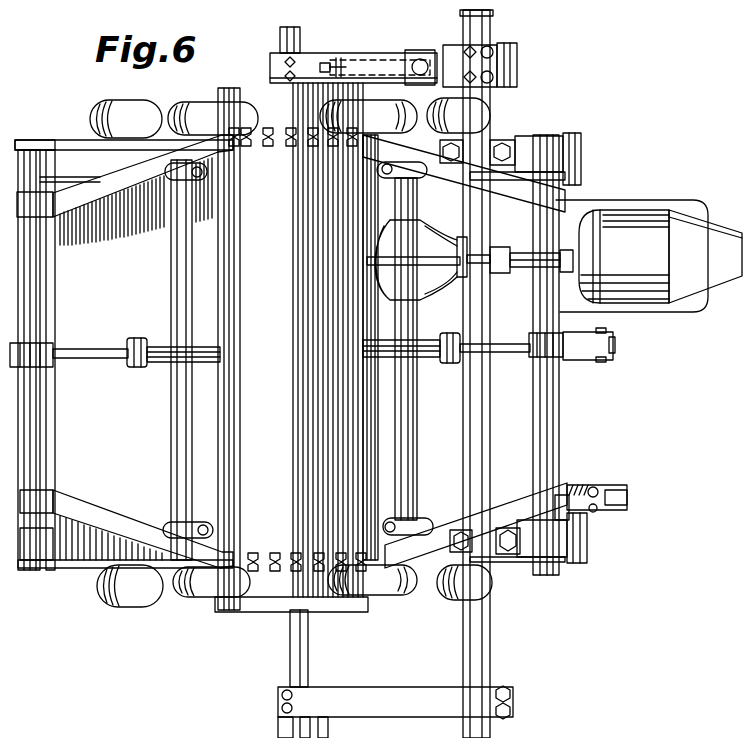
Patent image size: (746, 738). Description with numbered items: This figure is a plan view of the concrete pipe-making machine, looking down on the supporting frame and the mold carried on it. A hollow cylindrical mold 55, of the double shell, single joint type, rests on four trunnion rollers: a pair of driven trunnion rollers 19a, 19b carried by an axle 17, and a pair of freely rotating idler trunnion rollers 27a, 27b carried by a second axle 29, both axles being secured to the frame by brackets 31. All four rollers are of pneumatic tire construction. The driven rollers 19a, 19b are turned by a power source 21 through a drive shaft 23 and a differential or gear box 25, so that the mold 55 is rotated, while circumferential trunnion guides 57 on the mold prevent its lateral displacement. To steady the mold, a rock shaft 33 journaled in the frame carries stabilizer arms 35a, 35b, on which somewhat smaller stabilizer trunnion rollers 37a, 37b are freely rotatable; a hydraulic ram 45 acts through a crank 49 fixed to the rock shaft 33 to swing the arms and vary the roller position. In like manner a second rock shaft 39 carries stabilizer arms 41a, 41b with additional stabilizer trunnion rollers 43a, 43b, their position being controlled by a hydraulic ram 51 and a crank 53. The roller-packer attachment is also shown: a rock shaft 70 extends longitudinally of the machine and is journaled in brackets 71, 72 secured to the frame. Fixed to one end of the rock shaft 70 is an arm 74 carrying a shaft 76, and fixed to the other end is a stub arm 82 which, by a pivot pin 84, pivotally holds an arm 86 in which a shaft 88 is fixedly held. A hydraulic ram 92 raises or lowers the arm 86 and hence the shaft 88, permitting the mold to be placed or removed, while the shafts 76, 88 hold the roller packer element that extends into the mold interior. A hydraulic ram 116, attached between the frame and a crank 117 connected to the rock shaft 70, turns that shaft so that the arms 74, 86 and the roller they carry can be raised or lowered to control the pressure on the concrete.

The axle 17 is at (408, 424).
The trunnion roller 19a is at (438, 591).
The trunnion roller 19b is at (496, 111).
The power source 21 is at (619, 223).
The drive shaft 23 is at (520, 257).
The differential or gear box 25 is at (397, 278).
The idler trunnion roller 27a is at (135, 594).
The idler trunnion roller 27b is at (97, 117).
The axle 29 is at (180, 263).
The bracket 31 is at (180, 174).
The rock shaft 33 is at (43, 450).
The stabilizer arm 35a is at (78, 512).
The stabilizer arm 35b is at (108, 222).
The stabilizer trunnion roller 37a is at (208, 588).
The stabilizer trunnion roller 37b is at (203, 113).
The rock shaft 39 is at (549, 438).
The stabilizer arm 41a is at (453, 510).
The stabilizer arm 41b is at (448, 170).
The stabilizer trunnion roller 43a is at (380, 588).
The stabilizer trunnion roller 43b is at (327, 123).
The hydraulic ram 45 is at (160, 355).
The crank 49 is at (37, 350).
The hydraulic ram 51 is at (431, 350).
The crank 53 is at (584, 348).
The hollow cylindrical mold 55 is at (328, 603).
The circumferential trunnion guide 57 is at (243, 148).
The rock shaft 70 is at (494, 655).
The bracket 71 is at (496, 141).
The bracket 72 is at (490, 541).
The arm 74 is at (443, 707).
The shaft 76 is at (293, 658).
The stub arm 82 is at (455, 48).
The pivot pin 84 is at (422, 55).
The arm 86 is at (318, 62).
The shaft 88 is at (283, 32).
The hydraulic ram 92 is at (368, 116).
The hydraulic ram 116 is at (574, 484).
The crank 117 is at (492, 495).